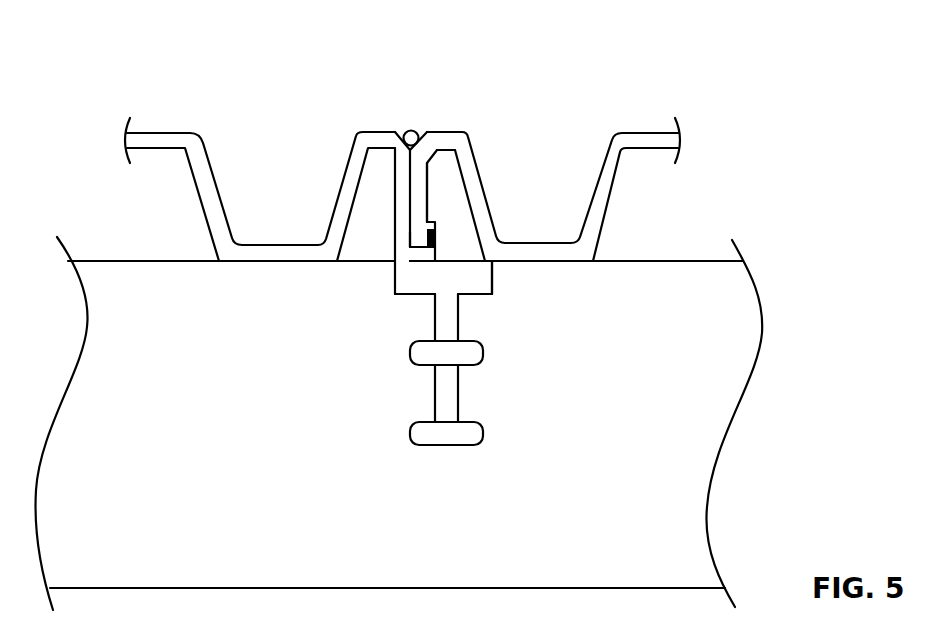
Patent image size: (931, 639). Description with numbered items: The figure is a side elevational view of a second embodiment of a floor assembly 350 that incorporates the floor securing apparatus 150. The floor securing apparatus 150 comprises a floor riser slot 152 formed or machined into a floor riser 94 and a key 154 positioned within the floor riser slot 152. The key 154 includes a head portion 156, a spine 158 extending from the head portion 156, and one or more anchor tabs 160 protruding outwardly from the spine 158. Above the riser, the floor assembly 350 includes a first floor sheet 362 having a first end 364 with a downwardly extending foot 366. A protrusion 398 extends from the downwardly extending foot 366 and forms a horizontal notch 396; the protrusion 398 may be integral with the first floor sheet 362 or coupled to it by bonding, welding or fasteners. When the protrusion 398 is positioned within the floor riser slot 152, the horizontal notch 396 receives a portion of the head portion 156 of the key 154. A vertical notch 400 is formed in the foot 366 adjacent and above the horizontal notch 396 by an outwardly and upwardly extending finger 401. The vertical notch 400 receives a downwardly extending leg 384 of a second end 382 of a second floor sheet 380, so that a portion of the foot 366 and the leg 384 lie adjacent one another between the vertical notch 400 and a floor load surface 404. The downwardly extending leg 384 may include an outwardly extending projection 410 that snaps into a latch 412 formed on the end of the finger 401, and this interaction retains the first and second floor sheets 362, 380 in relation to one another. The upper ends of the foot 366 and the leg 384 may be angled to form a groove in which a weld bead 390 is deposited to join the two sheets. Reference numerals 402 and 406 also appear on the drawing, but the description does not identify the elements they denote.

The floor riser 94 is at (678, 261).
The floor securing apparatus 150 is at (440, 404).
The floor riser slot 152 is at (404, 368).
The key 154 is at (445, 447).
The head portion 156 is at (478, 297).
The spine 158 is at (459, 398).
The anchor tabs 160 is at (484, 431).
The floor assembly 350 is at (417, 155).
The first floor sheet 362 is at (360, 132).
The first end 364 is at (391, 131).
The downwardly extending foot 366 is at (392, 237).
The second floor sheet 380 is at (463, 129).
The second end 382 is at (428, 131).
The downwardly extending leg 384 is at (422, 176).
The weld bead 390 is at (407, 131).
The horizontal notch 396 is at (444, 271).
The protrusion 398 is at (415, 297).
The vertical notch 400 is at (437, 204).
The finger 401 is at (431, 226).
The flange 402 is at (241, 132).
The floor load surface 404 is at (461, 113).
The base 406 is at (435, 307).
The outwardly extending projection 410 is at (423, 239).
The latch 412 is at (441, 209).